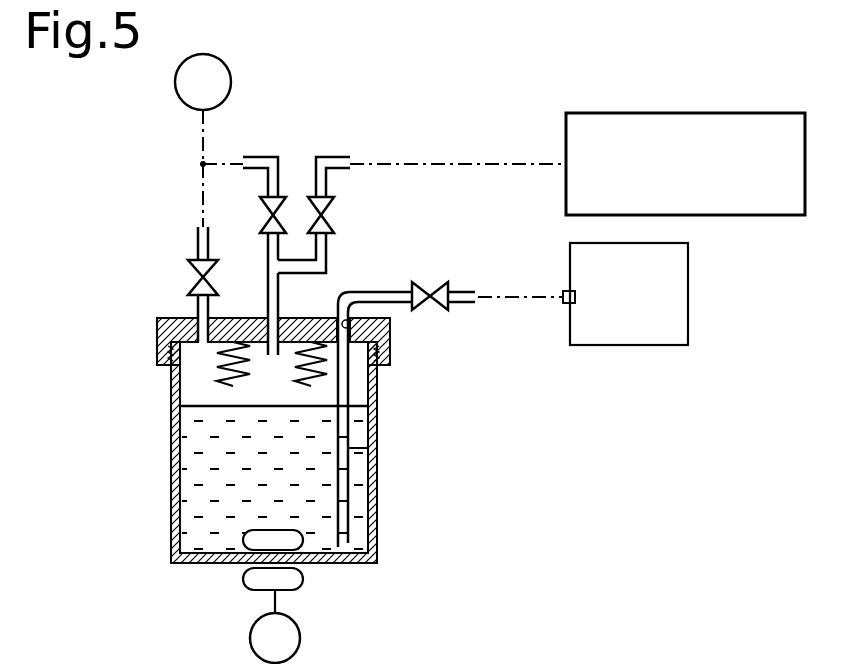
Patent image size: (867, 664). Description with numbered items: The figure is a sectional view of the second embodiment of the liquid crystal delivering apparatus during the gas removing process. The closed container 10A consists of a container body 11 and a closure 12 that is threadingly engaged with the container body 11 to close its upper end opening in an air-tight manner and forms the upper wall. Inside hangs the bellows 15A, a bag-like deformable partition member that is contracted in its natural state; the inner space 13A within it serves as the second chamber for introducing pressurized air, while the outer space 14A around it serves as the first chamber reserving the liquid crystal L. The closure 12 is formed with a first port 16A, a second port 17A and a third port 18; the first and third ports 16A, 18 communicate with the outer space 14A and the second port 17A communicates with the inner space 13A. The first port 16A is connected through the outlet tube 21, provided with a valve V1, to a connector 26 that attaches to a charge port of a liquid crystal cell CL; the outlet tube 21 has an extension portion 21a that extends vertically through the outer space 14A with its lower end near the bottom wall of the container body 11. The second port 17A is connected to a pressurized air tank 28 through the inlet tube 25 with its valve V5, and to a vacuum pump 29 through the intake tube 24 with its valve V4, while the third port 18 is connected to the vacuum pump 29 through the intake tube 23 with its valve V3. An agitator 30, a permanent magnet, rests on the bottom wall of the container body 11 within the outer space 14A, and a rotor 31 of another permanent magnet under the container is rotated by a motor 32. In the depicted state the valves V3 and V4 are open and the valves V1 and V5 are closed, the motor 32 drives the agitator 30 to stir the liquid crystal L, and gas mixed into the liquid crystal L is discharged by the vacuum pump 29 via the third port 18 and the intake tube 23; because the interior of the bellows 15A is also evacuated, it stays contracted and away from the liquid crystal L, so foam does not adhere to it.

The closed container 10A is at (311, 430).
The container body 11 is at (377, 510).
The closure 12 is at (157, 346).
The inner space 13A is at (276, 378).
The outer space 14A is at (227, 388).
The bellows 15A is at (183, 390).
The first port 16A is at (355, 325).
The second port 17A is at (277, 313).
The third port 18 is at (201, 316).
The outlet tube 21 is at (383, 291).
The extension portion 21a is at (370, 448).
The intake tube 23 is at (197, 245).
The intake tube 24 is at (268, 183).
The inlet tube 25 is at (328, 185).
The connector 26 is at (565, 304).
The pressurized air tank 28 is at (708, 113).
The vacuum pump 29 is at (231, 82).
The agitator 30 is at (262, 532).
The rotor 31 is at (303, 580).
The motor 32 is at (300, 637).
The liquid crystal L is at (215, 470).
The liquid crystal cell CL is at (632, 346).
The valve V1 is at (436, 282).
The valve V3 is at (190, 272).
The valve V4 is at (262, 222).
The valve V5 is at (330, 220).